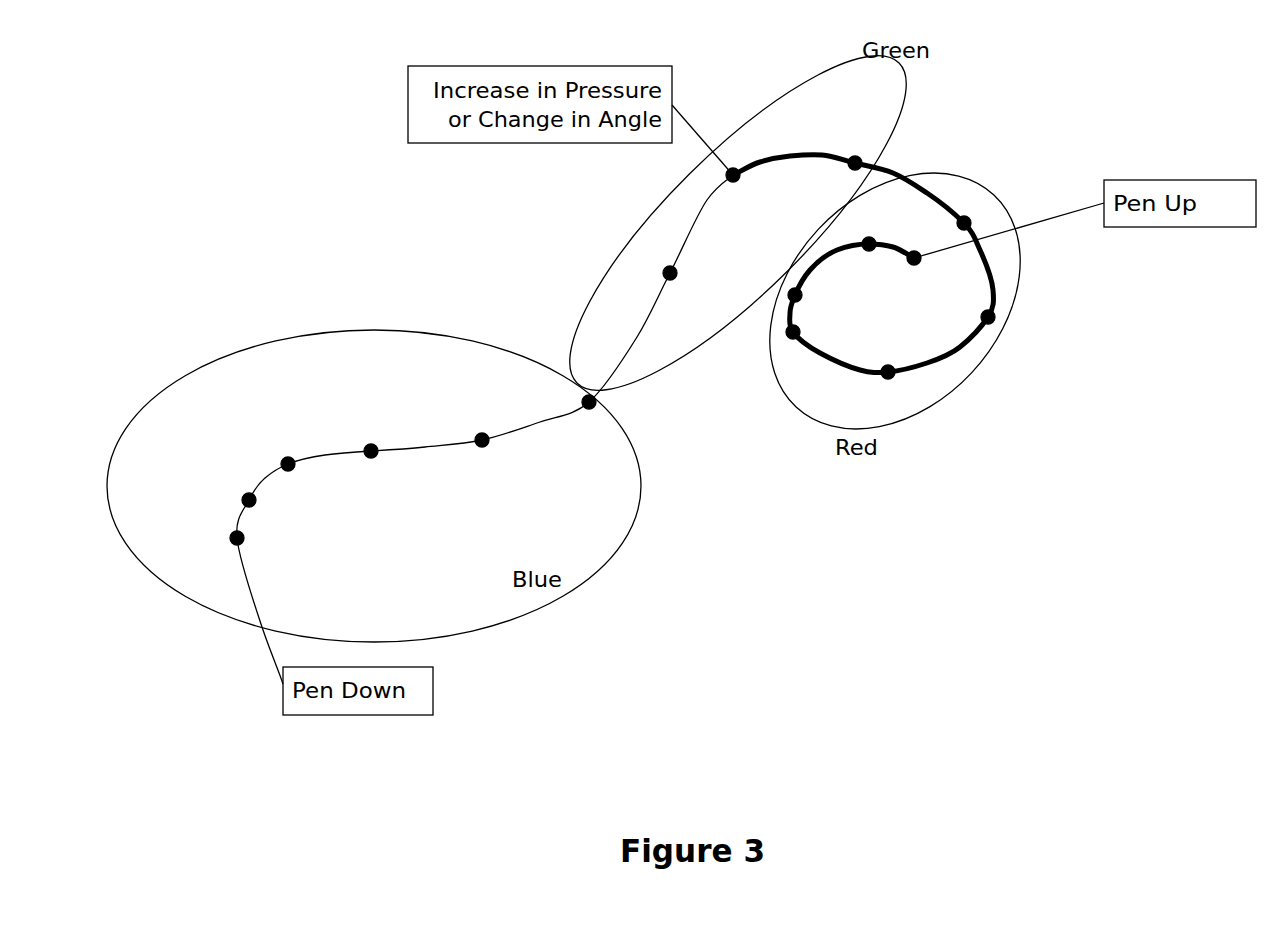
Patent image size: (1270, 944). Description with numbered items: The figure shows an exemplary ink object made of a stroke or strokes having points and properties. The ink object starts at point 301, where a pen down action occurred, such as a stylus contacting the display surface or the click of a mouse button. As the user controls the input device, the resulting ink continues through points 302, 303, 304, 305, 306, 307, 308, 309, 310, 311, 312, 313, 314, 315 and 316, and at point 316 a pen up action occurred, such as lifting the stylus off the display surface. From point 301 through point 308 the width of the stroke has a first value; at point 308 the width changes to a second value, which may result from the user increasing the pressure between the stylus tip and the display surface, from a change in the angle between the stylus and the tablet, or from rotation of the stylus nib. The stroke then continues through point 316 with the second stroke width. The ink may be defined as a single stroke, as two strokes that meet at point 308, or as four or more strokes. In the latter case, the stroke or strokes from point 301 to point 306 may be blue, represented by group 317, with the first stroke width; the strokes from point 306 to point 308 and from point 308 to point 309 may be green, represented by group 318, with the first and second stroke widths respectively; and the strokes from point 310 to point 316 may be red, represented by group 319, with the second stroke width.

The point 301 is at (233, 535).
The point 302 is at (245, 497).
The point 303 is at (284, 461).
The point 304 is at (367, 448).
The point 305 is at (478, 437).
The point 306 is at (586, 398).
The point 307 is at (667, 270).
The point 308 is at (735, 172).
The point 309 is at (858, 161).
The point 310 is at (966, 220).
The point 311 is at (991, 316).
The point 312 is at (891, 373).
The point 313 is at (790, 335).
The point 314 is at (792, 296).
The point 315 is at (866, 242).
The point 316 is at (917, 258).
The group 317 is at (593, 577).
The group 318 is at (905, 95).
The group 319 is at (883, 428).